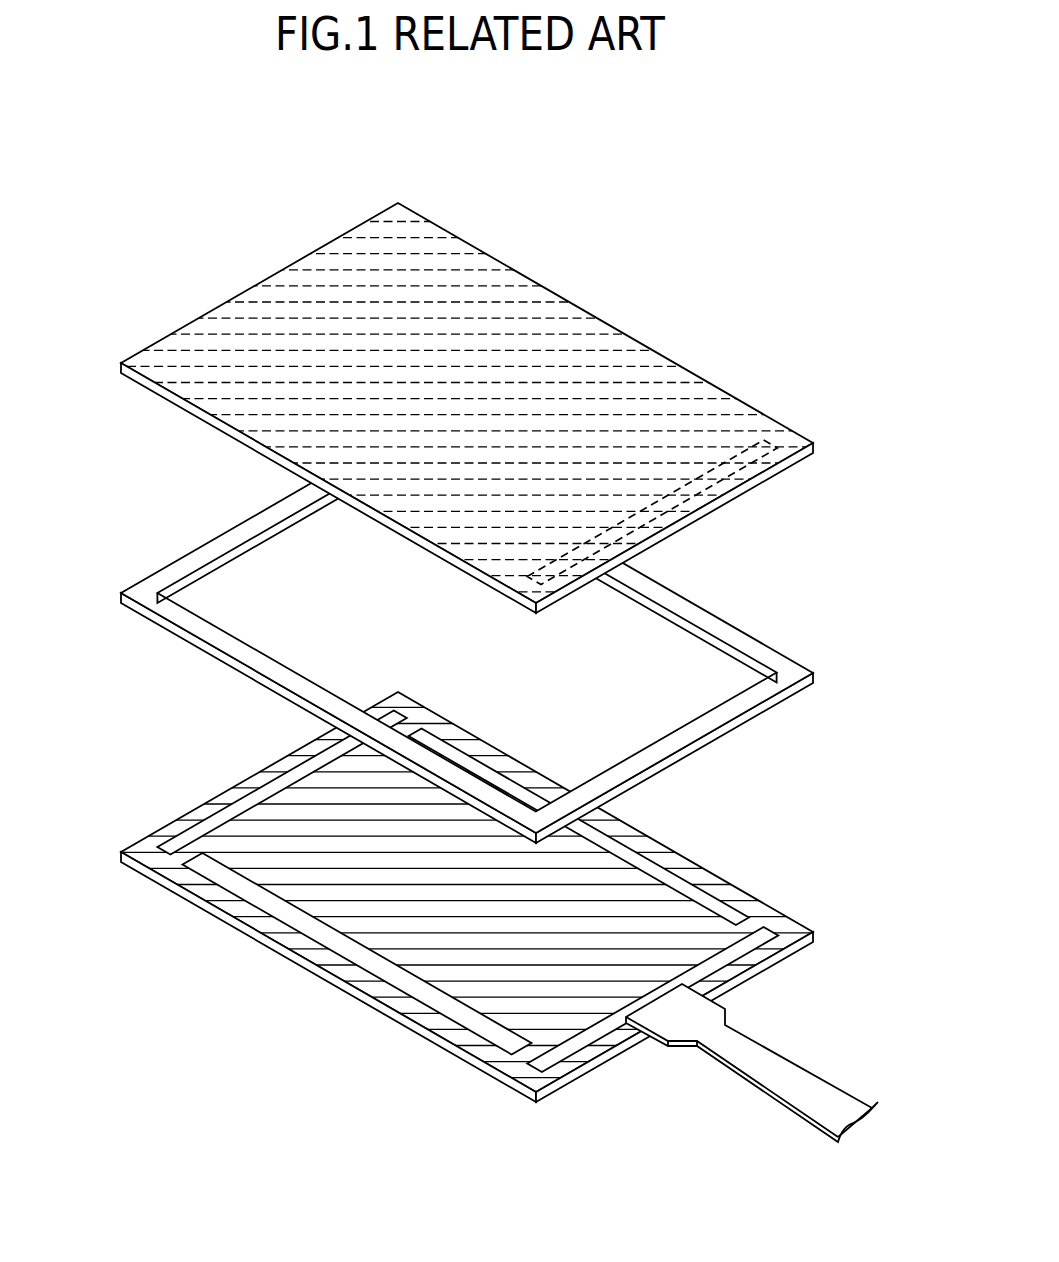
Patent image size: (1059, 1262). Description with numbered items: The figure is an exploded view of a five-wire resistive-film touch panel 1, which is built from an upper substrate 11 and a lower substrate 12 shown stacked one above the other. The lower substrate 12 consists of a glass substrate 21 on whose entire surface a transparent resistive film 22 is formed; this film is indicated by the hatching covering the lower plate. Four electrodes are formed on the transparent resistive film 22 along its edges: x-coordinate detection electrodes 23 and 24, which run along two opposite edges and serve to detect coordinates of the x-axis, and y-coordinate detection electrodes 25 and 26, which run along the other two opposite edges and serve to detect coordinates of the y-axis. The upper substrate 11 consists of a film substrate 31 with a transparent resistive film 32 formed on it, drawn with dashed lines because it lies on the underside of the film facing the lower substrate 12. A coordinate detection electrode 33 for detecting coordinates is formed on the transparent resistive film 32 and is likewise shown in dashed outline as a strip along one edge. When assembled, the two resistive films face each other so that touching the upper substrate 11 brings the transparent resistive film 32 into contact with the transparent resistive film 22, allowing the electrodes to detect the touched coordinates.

The five-wire resistive-film touch panel 1 is at (80, 199).
The upper substrate 11 is at (470, 408).
The lower substrate 12 is at (495, 917).
The glass substrate 21 is at (498, 1070).
The transparent resistive film 22 is at (653, 910).
The x-coordinate detection electrode 23 is at (207, 813).
The x-coordinate detection electrode 24 is at (757, 963).
The y-coordinate detection electrode 25 is at (302, 937).
The y-coordinate detection electrode 26 is at (652, 852).
The film substrate 31 is at (452, 235).
The transparent resistive film 32 is at (695, 418).
The coordinate detection electrode 33 is at (763, 482).